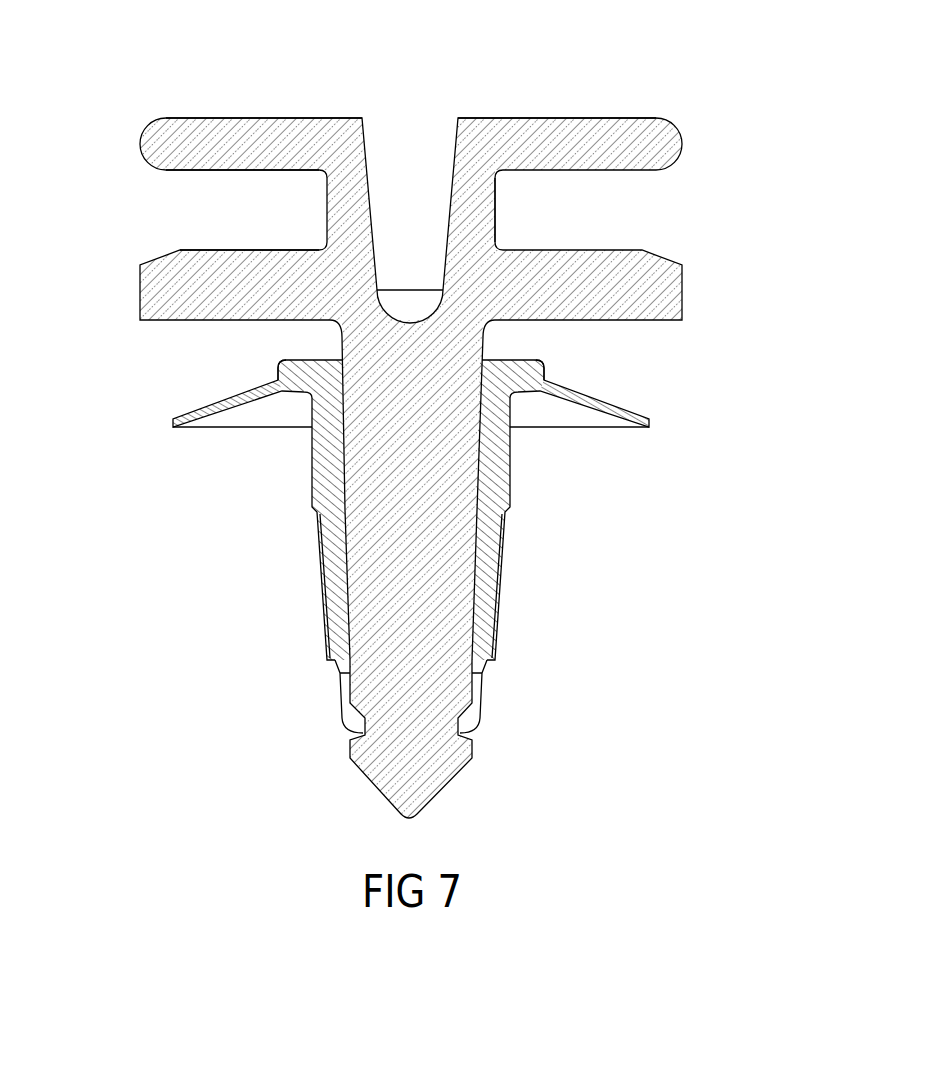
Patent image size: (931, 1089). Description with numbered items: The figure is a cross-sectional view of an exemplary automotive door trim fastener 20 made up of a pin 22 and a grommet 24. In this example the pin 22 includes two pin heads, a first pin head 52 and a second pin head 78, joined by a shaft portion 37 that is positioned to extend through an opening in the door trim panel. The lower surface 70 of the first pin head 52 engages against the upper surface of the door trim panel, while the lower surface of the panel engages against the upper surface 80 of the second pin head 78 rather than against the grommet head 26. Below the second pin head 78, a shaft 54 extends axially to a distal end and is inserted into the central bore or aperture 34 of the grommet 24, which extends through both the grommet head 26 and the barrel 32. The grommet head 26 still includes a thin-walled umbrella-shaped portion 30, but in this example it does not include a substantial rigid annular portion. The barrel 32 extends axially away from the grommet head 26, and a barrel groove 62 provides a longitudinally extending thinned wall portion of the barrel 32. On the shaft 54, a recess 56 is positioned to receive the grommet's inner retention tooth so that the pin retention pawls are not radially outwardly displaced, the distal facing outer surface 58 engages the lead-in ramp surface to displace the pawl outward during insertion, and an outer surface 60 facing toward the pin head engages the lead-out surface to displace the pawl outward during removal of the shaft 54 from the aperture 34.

The automotive door trim fastener 20 is at (579, 62).
The pin 22 is at (683, 116).
The pin head 52 is at (162, 144).
The lower surface of the pin head 70 is at (226, 170).
The shaft portion 37 is at (478, 196).
The second pin head 78 is at (667, 283).
The upper surface of the second pin head 80 is at (239, 250).
The shaft 54 is at (390, 586).
The outer surface of the shaft facing toward the pin head 60 is at (362, 732).
The recess 56 is at (458, 728).
The distal facing outer surface 58 is at (455, 777).
The grommet 24 is at (560, 470).
The grommet head 26 is at (567, 410).
The thin-walled umbrella-shaped portion 30 is at (630, 412).
The barrel 32 is at (322, 481).
The central bore or aperture 34 is at (478, 512).
The barrel groove 62 is at (500, 591).